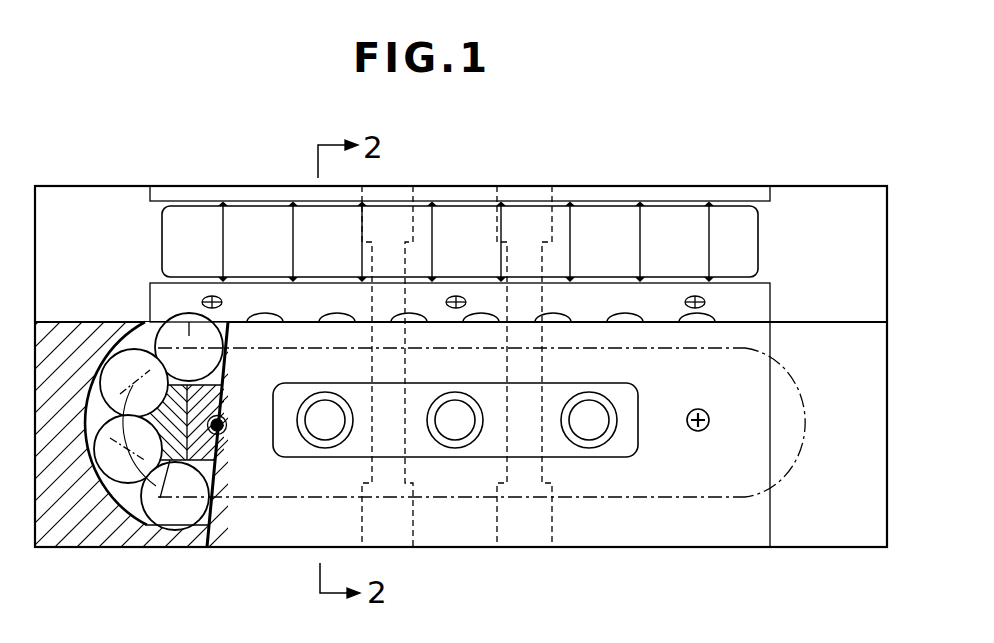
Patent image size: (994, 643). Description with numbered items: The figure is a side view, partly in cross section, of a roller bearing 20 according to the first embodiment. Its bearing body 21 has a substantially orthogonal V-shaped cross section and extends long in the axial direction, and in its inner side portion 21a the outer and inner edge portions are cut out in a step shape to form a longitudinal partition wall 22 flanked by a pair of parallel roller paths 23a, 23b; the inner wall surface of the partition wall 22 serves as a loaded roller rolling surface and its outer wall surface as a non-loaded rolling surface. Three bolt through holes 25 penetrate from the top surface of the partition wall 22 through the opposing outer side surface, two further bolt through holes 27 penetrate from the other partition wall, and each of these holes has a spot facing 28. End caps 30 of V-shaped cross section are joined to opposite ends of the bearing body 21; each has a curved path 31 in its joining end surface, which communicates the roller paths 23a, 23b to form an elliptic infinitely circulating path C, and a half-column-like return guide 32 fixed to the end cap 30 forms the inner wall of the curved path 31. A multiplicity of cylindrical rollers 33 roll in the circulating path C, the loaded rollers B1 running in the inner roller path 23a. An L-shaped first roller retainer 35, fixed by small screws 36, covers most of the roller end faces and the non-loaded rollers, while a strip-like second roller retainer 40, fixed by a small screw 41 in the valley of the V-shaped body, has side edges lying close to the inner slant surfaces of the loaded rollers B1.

The roller bearing 20 is at (687, 148).
The bearing body 21 is at (195, 543).
The inner side portion 21a is at (630, 442).
The partition wall 22 is at (212, 398).
The roller path 23a is at (217, 393).
The roller path 23b is at (214, 464).
The bolt through hole 25 is at (462, 431).
The bolt through hole 27 is at (545, 257).
The spot facing 28 is at (500, 240).
The end cap 30 is at (60, 545).
The curved path 31 is at (80, 372).
The return guide 32 is at (150, 512).
The cylindrical roller 33 is at (190, 333).
The first roller retainer 35 is at (733, 188).
The small screw 36 is at (710, 412).
The second roller retainer 40 is at (596, 292).
The small screw 41 is at (710, 302).
The loaded roller B1 is at (243, 318).
The infinitely circulating path C is at (752, 498).